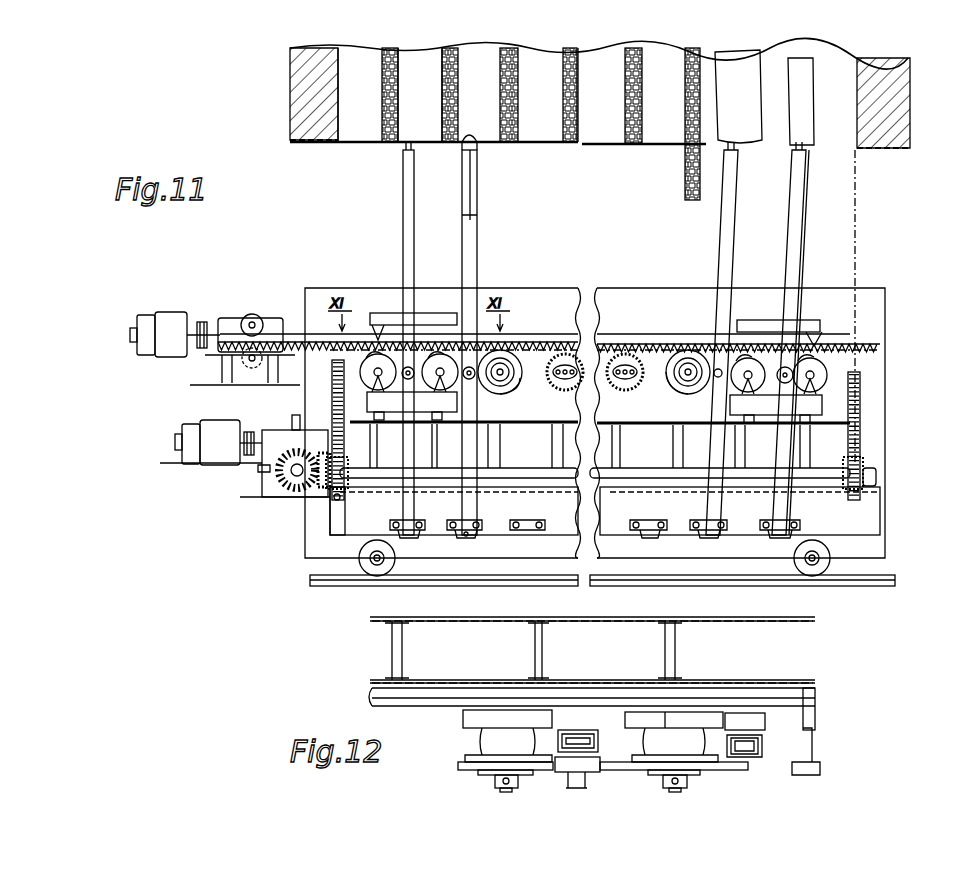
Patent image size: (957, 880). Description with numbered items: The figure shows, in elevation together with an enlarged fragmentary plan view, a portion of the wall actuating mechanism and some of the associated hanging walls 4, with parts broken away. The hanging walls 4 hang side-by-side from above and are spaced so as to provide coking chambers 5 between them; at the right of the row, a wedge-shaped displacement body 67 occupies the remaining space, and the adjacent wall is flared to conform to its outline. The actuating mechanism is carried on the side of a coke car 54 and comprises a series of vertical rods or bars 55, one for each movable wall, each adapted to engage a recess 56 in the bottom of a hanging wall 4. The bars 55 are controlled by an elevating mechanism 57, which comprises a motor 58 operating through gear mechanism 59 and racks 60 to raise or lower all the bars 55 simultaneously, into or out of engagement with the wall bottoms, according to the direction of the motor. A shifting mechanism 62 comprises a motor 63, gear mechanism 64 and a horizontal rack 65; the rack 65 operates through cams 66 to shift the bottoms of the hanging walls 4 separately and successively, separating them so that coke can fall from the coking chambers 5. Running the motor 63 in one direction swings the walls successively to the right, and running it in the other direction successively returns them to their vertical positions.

In FIG. 11, the hanging wall 4 is at (425, 132).
In FIG. 11, the coking chamber 5 is at (390, 143).
In FIG. 11, the coke car 54 is at (318, 290).
In FIG. 11, the vertical rod 55 is at (403, 196).
In FIG. 12, the vertical rod 55 is at (598, 768).
In FIG. 11, the recess 56 is at (466, 140).
In FIG. 11, the elevating mechanism 57 is at (335, 518).
In FIG. 11, the motor 58 is at (215, 468).
In FIG. 11, the gear mechanism 59 is at (290, 490).
In FIG. 11, the rack 60 is at (332, 390).
In FIG. 11, the shifting mechanism 62 is at (280, 305).
In FIG. 11, the motor 63 is at (166, 314).
In FIG. 11, the gear mechanism 64 is at (233, 318).
In FIG. 11, the horizontal rack 65 is at (615, 348).
In FIG. 11, the cam 66 is at (370, 366).
In FIG. 12, the cam 66 is at (466, 766).
In FIG. 11, the displacement body 67 is at (856, 278).